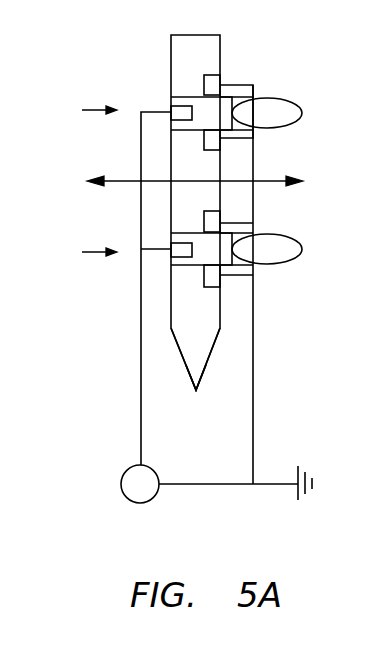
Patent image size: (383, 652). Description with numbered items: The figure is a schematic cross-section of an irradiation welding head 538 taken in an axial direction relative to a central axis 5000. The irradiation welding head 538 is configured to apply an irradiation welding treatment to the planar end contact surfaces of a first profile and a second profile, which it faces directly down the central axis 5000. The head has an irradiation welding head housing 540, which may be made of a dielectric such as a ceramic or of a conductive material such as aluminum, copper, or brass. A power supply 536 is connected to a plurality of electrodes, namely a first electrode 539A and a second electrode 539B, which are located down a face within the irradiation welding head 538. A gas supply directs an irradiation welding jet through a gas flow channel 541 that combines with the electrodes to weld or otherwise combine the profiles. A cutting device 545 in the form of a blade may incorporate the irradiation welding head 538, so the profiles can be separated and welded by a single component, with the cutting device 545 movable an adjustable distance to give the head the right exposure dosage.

The power supply 536 is at (132, 483).
The irradiation welding head 538 is at (222, 303).
The first electrode 539A is at (217, 82).
The second electrode 539B is at (172, 108).
The irradiation welding head housing 540 is at (178, 352).
The gas flow channel 541 is at (157, 112).
The cutting device 545 is at (183, 362).
The central axis 5000 is at (118, 178).